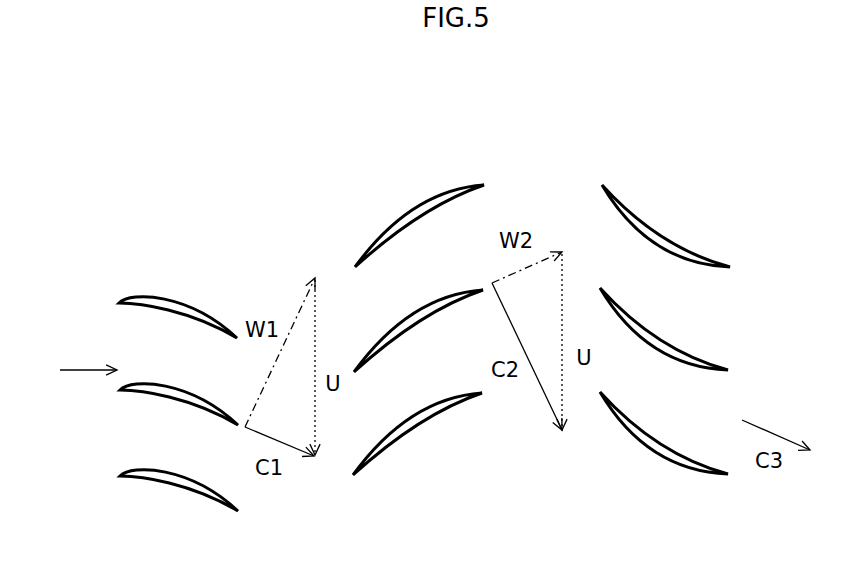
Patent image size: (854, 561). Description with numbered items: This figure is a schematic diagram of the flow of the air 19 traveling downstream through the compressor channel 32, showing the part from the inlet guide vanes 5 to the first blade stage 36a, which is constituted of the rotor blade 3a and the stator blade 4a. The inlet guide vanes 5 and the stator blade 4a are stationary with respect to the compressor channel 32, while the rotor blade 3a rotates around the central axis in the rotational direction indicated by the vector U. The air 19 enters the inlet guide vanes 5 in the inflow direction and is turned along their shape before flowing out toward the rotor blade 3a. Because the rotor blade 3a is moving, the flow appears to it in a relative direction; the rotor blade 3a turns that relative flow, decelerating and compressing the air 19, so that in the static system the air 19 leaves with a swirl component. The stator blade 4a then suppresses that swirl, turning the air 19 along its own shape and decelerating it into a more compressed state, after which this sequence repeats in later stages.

The compressor channel 32 is at (68, 204).
The inlet guide vanes 5 is at (173, 300).
The first blade stage 36a is at (393, 128).
The rotor blade 3a is at (410, 202).
The stator blade 4a is at (615, 193).
The air 19 is at (88, 372).